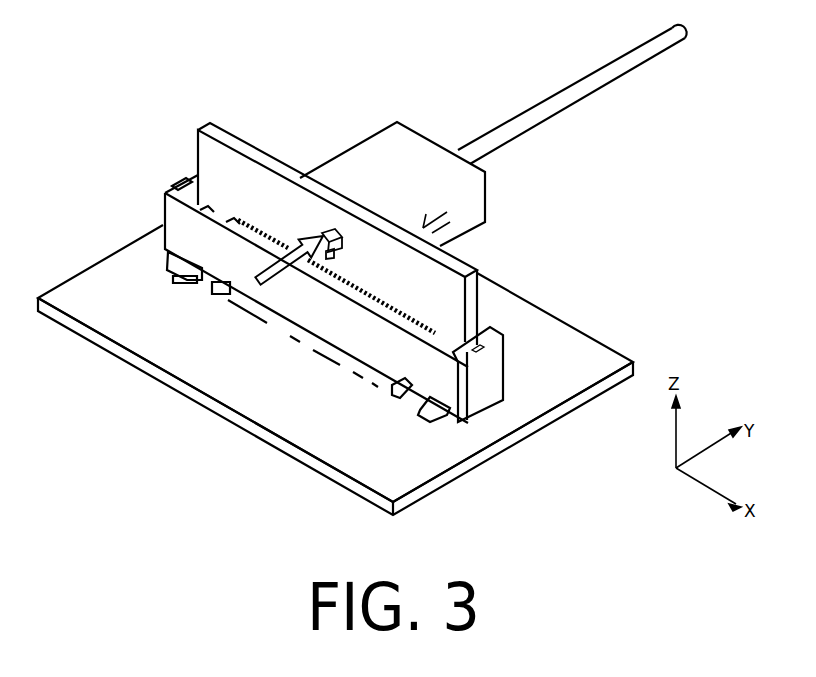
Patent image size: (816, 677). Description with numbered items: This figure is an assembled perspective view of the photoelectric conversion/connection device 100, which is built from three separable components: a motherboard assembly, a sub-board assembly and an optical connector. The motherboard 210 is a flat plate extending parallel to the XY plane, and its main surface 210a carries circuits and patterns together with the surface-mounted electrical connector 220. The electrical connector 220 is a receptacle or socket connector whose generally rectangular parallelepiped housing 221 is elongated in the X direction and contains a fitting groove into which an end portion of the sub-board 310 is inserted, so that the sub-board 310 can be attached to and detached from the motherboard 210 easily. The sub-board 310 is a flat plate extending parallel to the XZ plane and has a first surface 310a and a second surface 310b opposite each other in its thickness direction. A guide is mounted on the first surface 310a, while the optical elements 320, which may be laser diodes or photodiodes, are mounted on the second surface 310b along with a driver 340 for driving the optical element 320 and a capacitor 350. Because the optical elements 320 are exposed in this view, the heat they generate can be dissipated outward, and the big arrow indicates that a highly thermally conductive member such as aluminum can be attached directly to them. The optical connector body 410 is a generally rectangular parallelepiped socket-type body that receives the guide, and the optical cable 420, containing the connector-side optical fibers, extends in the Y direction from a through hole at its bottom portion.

The photoelectric conversion/connection device 100 is at (254, 81).
The motherboard 210 is at (511, 436).
The main surface 210a is at (586, 350).
The electrical connector 220 is at (303, 300).
The housing 221 is at (481, 405).
The sub-board 310 is at (210, 127).
The first surface 310a is at (232, 133).
The second surface 310b is at (208, 154).
The optical element 320 is at (335, 222).
The driver 340 is at (343, 247).
The capacitor 350 is at (341, 259).
The optical connector body 410 is at (347, 168).
The optical cable 420 is at (583, 97).